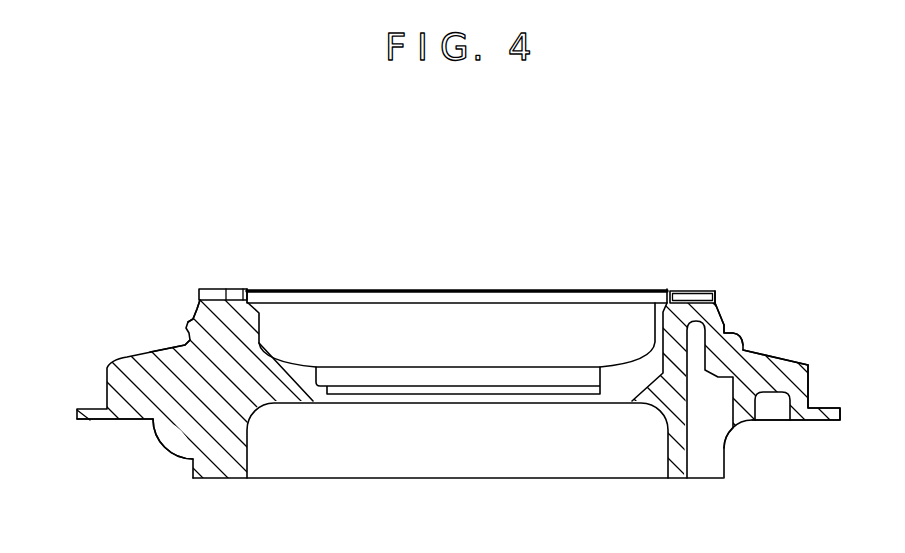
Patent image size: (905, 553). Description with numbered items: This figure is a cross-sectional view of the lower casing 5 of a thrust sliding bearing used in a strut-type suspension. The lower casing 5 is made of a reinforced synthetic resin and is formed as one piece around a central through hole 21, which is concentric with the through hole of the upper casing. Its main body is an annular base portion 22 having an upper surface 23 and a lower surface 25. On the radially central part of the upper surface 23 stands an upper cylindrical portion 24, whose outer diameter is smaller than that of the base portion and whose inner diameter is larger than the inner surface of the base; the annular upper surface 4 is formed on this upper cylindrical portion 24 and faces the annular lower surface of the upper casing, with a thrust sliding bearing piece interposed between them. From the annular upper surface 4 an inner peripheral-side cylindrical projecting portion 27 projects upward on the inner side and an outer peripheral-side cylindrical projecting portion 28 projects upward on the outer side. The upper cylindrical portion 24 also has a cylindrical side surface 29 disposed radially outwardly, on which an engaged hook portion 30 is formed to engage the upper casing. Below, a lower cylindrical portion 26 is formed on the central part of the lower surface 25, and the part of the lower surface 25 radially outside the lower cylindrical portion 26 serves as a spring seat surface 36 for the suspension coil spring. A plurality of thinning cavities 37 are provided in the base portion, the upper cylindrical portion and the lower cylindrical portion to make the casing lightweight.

The annular upper surface 4 is at (223, 289).
The lower casing 5 is at (811, 320).
The through hole 21 is at (442, 400).
The annular base portion 22 is at (137, 385).
The upper surface 23 is at (157, 350).
The upper cylindrical portion 24 is at (207, 312).
The lower surface 25 is at (142, 421).
The lower cylindrical portion 26 is at (210, 458).
The inner peripheral-side cylindrical projecting portion 27 is at (668, 290).
The outer peripheral-side cylindrical projecting portion 28 is at (718, 292).
The cylindrical side surface 29 is at (722, 308).
The engaged hook portion 30 is at (728, 333).
The spring seat surface 36 is at (798, 422).
The thinning cavities 37 is at (790, 360).